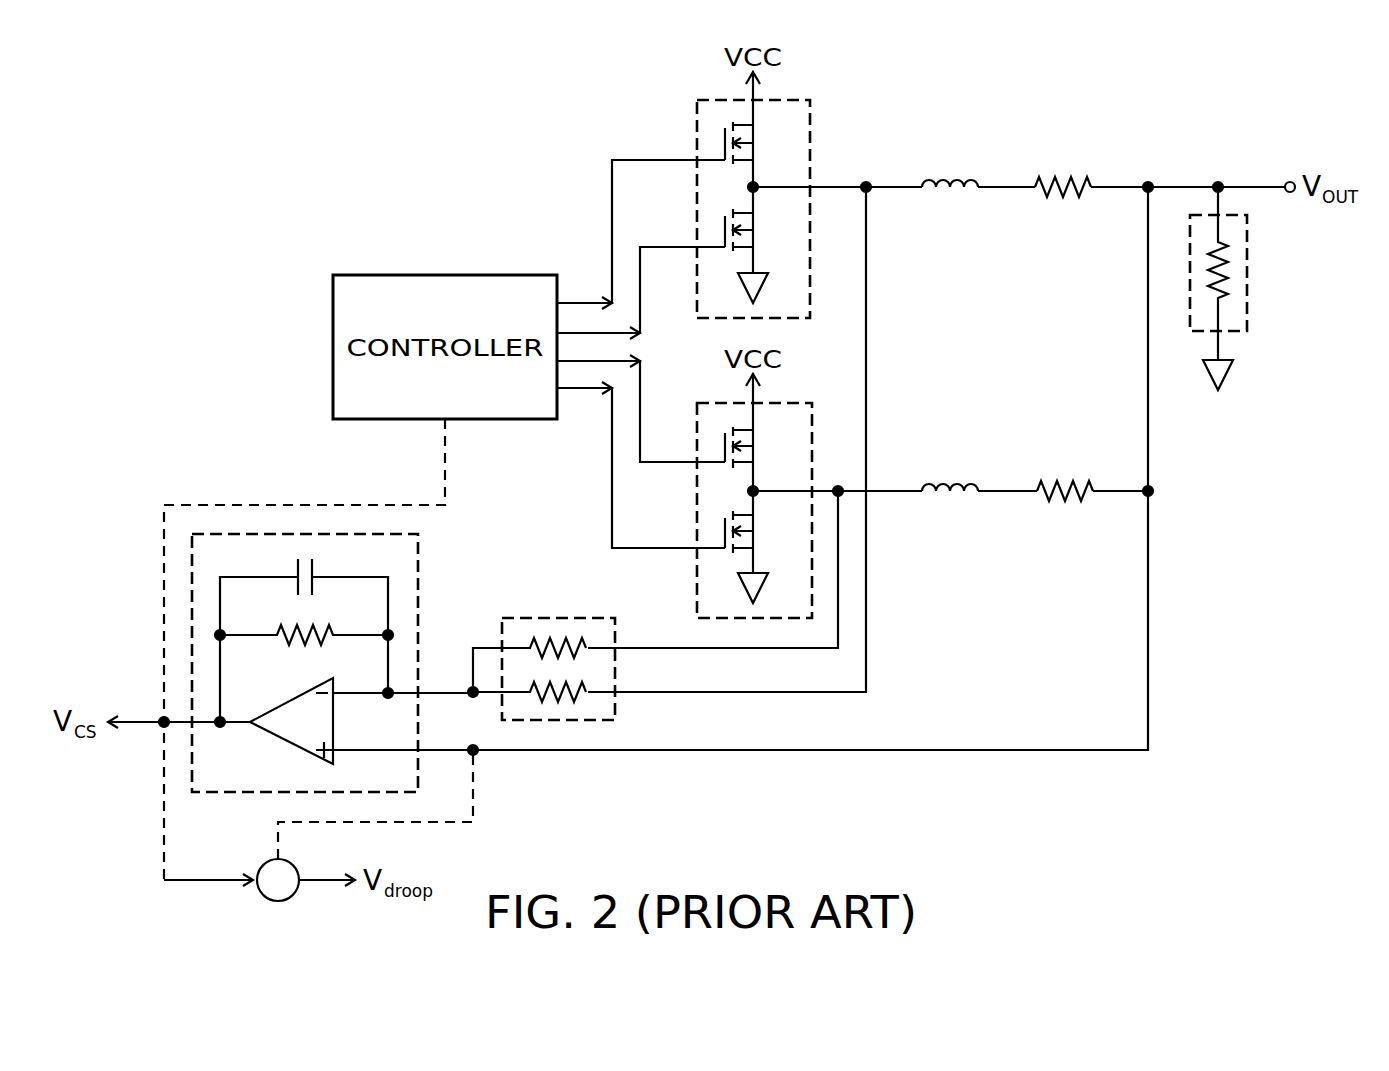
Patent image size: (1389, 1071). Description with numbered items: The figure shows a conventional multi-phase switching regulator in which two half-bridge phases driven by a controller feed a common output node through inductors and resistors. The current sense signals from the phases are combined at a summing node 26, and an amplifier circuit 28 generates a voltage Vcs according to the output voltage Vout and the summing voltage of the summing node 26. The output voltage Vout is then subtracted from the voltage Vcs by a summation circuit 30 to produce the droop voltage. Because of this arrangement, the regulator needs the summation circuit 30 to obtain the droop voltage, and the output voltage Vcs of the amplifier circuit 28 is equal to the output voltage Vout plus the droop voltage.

The summing node 26 is at (473, 692).
The amplifier circuit 28 is at (418, 577).
The summation circuit 30 is at (293, 896).